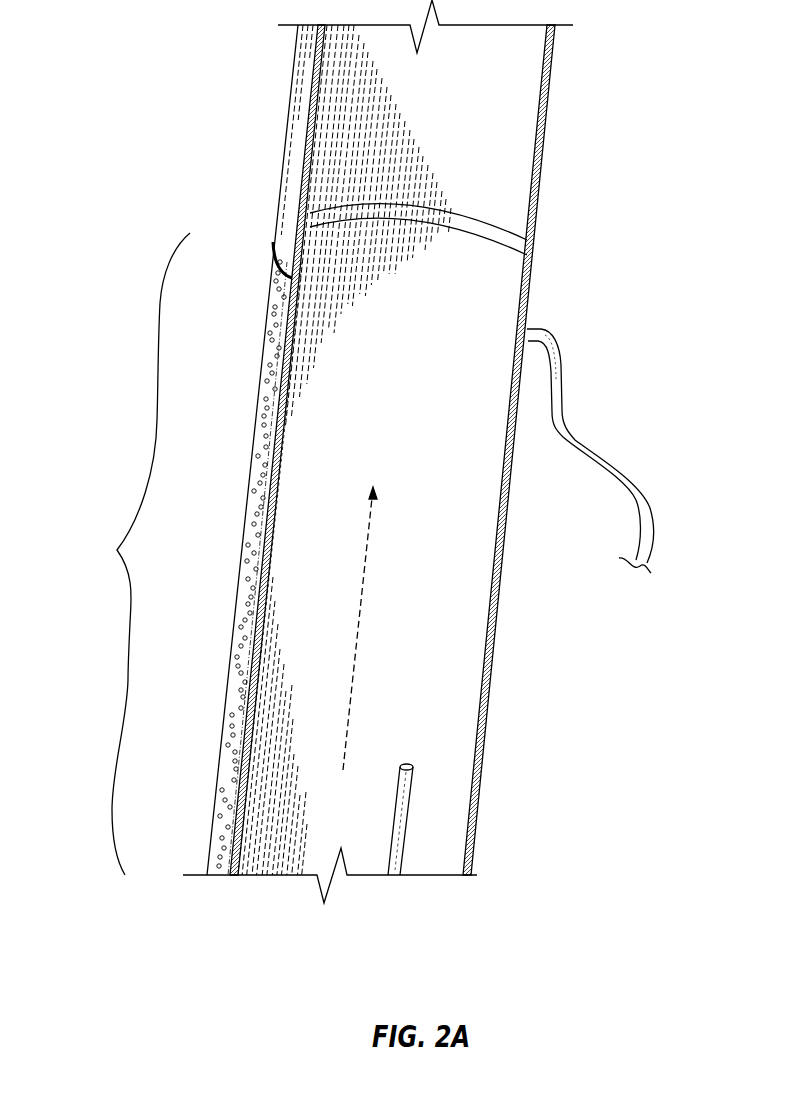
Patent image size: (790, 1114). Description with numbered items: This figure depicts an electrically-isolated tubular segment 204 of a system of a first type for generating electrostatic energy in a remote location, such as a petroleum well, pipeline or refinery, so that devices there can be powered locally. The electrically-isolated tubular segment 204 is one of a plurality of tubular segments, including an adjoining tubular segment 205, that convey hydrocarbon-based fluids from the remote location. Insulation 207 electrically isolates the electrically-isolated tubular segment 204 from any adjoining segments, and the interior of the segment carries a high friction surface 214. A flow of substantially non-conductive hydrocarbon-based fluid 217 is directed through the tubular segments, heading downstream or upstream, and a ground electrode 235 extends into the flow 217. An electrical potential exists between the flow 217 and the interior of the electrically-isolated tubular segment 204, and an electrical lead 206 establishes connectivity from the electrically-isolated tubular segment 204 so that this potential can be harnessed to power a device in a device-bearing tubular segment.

The electrically-isolated tubular segment 204 is at (131, 554).
The tubular segment 205 is at (451, 126).
The electrical lead 206 is at (567, 397).
The insulation 207 is at (266, 297).
The high friction surface 214 is at (480, 560).
The flow of substantially non-conductive hydrocarbon-based fluid 217 is at (362, 642).
The ground electrode 235 is at (407, 815).